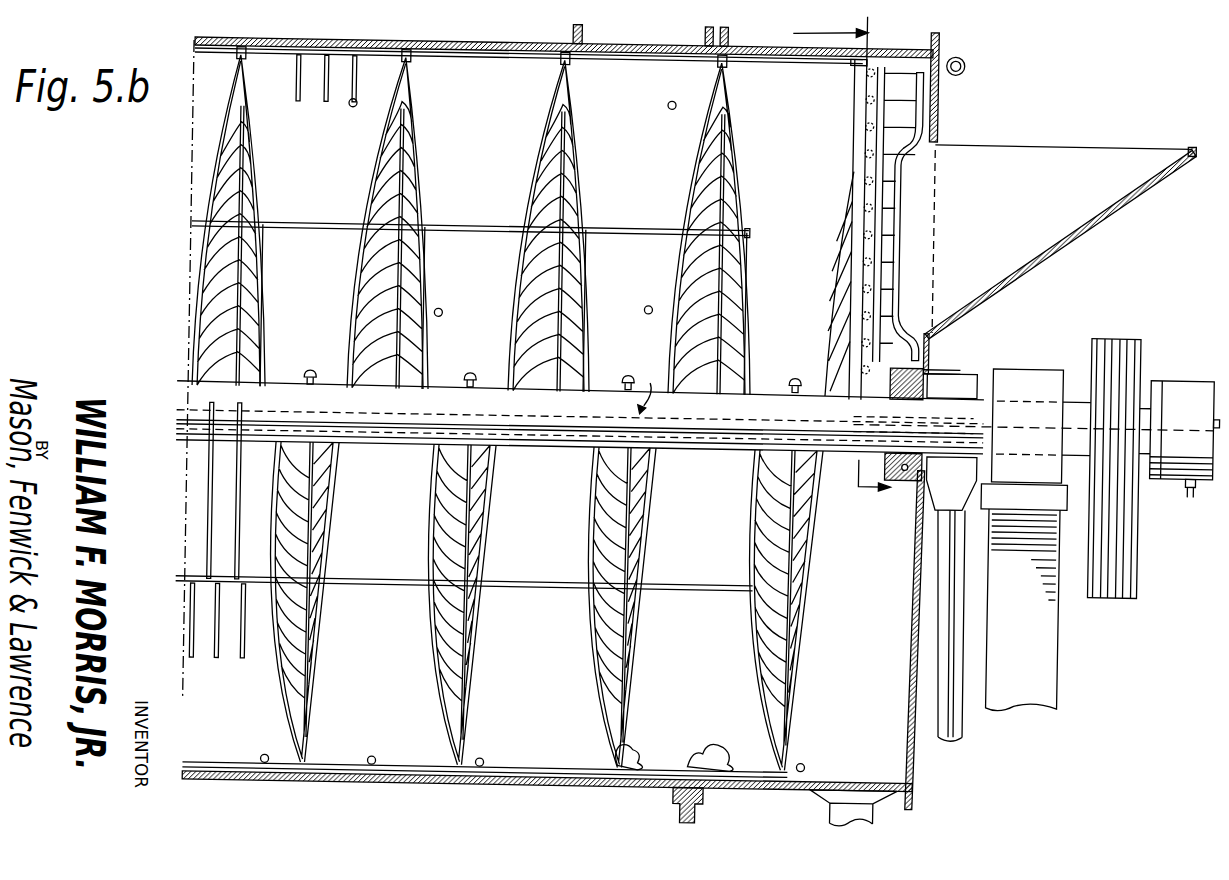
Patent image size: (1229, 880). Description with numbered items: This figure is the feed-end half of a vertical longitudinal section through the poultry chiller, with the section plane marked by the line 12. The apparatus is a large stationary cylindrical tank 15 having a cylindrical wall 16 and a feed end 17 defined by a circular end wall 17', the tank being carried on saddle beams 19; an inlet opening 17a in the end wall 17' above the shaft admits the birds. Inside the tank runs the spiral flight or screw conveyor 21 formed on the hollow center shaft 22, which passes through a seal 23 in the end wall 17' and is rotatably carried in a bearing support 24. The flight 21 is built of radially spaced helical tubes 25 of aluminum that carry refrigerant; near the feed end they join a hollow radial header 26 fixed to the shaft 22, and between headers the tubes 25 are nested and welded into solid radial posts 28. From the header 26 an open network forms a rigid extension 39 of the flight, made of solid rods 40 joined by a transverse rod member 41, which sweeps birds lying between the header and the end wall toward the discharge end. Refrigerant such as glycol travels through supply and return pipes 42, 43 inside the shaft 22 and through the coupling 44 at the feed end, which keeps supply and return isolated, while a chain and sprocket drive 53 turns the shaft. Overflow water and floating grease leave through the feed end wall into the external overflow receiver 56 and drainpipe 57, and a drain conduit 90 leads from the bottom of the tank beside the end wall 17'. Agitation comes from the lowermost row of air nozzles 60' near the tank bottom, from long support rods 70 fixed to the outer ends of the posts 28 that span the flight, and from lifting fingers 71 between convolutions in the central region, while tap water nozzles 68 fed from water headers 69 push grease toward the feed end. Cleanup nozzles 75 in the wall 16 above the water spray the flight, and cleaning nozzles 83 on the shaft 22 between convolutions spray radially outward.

The section line 12 is at (852, 262).
The cylindrical tank 15 is at (558, 405).
The cylindrical wall 16 is at (388, 36).
The feed end 17 is at (1060, 191).
The circular end wall 17' is at (963, 232).
The inlet opening 17a is at (941, 142).
The saddle beams 19 is at (716, 805).
The spiral flight or screw conveyor 21 is at (521, 408).
The hollow center shaft 22 is at (694, 443).
The seals 23 is at (892, 460).
The bearing supports 24 is at (1025, 357).
The helical tubes 25 is at (748, 180).
The hollow radial header 26 is at (855, 84).
The solid radial posts 28 is at (432, 255).
The rigid extension 39 is at (927, 170).
The solid rods 40 is at (871, 112).
The transverse rod member 41 is at (905, 214).
The supply pipe 42 is at (401, 409).
The return pipe 43 is at (866, 400).
The coupling 44 is at (1185, 365).
The chain and sprocket drive 53 is at (1122, 323).
The external overflow receiver 56 is at (978, 372).
The drainpipe 57 is at (974, 714).
The lowermost row of air nozzles 60' is at (532, 744).
The tap water nozzles 68 is at (354, 104).
The water headers 69 is at (964, 52).
The support rods 70 is at (494, 55).
The lifting fingers 71 is at (327, 100).
The cleanup nozzles 75 is at (447, 308).
The cleaning nozzles 83 is at (315, 367).
The drain conduit 90 is at (890, 802).